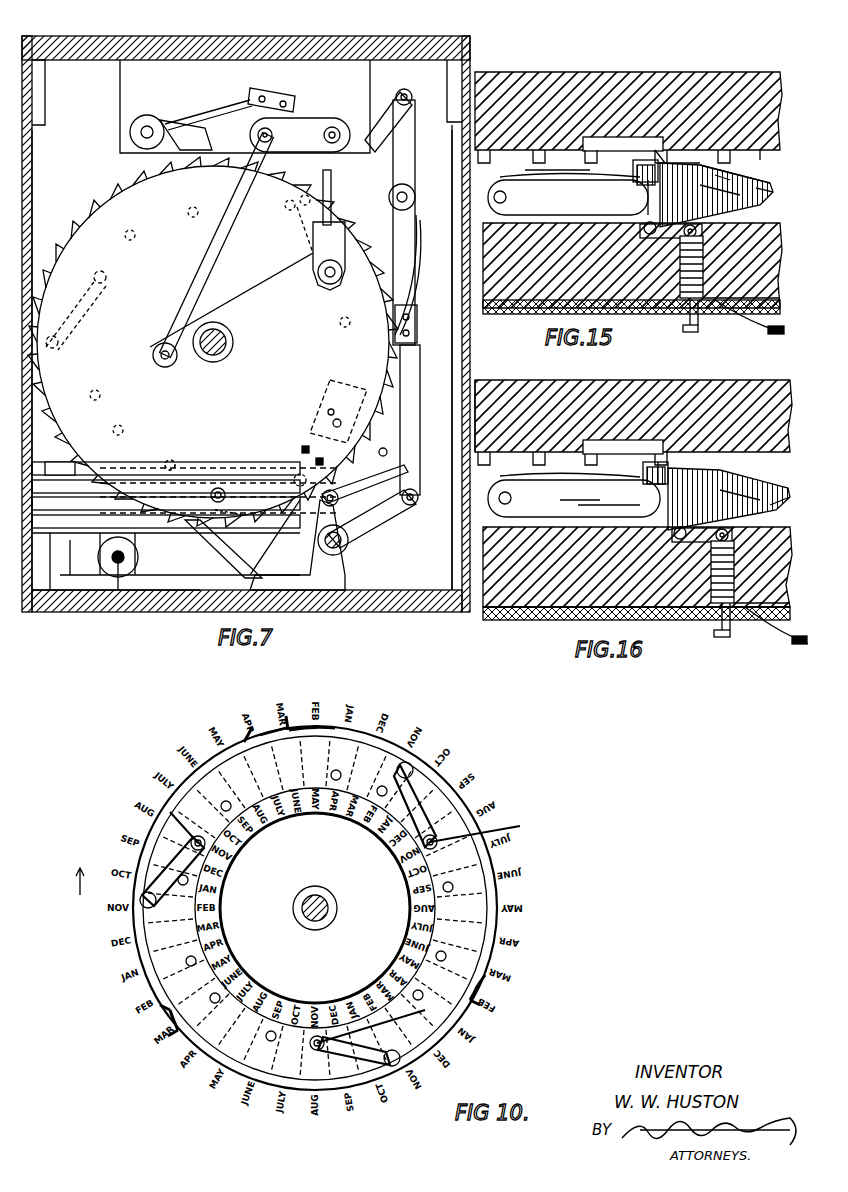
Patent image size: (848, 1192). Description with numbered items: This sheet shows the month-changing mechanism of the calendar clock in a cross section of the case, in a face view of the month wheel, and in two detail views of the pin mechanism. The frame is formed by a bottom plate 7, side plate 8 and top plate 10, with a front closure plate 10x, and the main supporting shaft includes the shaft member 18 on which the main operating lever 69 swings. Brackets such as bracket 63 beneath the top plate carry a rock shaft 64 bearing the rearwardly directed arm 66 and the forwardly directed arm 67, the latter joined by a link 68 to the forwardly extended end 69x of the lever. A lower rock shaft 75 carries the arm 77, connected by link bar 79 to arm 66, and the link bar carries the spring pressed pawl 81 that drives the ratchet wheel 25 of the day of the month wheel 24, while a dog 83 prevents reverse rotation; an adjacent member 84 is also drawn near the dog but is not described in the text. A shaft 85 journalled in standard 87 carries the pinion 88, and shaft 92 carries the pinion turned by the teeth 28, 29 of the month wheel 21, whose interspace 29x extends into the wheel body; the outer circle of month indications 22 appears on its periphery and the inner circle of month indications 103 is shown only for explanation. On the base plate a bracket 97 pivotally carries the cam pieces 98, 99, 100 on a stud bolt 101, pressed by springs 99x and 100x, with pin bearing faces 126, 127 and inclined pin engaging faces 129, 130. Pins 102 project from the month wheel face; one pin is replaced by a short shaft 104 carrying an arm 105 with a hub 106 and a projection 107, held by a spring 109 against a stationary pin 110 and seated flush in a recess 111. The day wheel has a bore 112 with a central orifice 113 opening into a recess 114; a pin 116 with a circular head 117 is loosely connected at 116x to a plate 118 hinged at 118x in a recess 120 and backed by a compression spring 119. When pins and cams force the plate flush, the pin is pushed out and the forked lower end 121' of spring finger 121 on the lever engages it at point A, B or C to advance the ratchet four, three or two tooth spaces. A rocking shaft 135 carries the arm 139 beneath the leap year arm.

In FIG. 7, the bottom plate 7 is at (56, 604).
In FIG. 7, the side plate 8 is at (106, 600).
In FIG. 7, the top plate 10 is at (166, 58).
In FIG. 7, the front closure plate 10x is at (30, 181).
In FIG. 7, the shaft member 18 is at (234, 344).
In FIG. 10, the shaft member 18 is at (337, 908).
In FIG. 15, the month wheel 21 is at (640, 74).
In FIG. 16, the month wheel 21 is at (656, 388).
In FIG. 10, the month wheel 21 is at (272, 1088).
In FIG. 10, the outer circle of month indications 22 is at (498, 905).
In FIG. 15, the day of the month wheel 24 is at (513, 312).
In FIG. 16, the day of the month wheel 24 is at (508, 620).
In FIG. 7, the ratchet wheel 25 is at (178, 190).
In FIG. 16, the ratchet wheel 25 is at (624, 380).
In FIG. 10, the tooth 28 is at (298, 728).
In FIG. 10, the tooth 29 is at (254, 728).
In FIG. 10, the interspace 29x is at (272, 728).
In FIG. 7, the bracket 63 is at (240, 106).
In FIG. 7, the rock shaft 64 is at (334, 126).
In FIG. 7, the rearwardly directed arm 66 is at (383, 98).
In FIG. 7, the forwardly directed arm 67 is at (302, 122).
In FIG. 7, the link 68 is at (186, 282).
In FIG. 7, the main operating lever 69 is at (231, 277).
In FIG. 7, the forwardly extended end 69x is at (165, 368).
In FIG. 7, the rock shaft 75 is at (340, 542).
In FIG. 7, the arm 77 is at (400, 516).
In FIG. 7, the link bar 79 is at (414, 428).
In FIG. 7, the spring pressed pawl 81 is at (402, 215).
In FIG. 7, the dog 83 is at (170, 124).
In FIG. 7, the plunger 84 is at (331, 178).
In FIG. 7, the shaft 85 is at (338, 495).
In FIG. 7, the standard 87 is at (432, 574).
In FIG. 7, the pinion 88 is at (365, 488).
In FIG. 7, the shaft 92 is at (388, 452).
In FIG. 7, the bracket 97 is at (160, 530).
In FIG. 7, the cam piece 98 is at (74, 480).
In FIG. 7, the cam piece 99 is at (108, 498).
In FIG. 15, the cam piece 99 is at (636, 182).
In FIG. 15, the spring 99x is at (548, 177).
In FIG. 16, the cam piece 100 is at (580, 507).
In FIG. 16, the spring 100x is at (588, 507).
In FIG. 7, the stud bolt 101 is at (62, 460).
In FIG. 15, the stud bolt 101 is at (507, 198).
In FIG. 16, the stud bolt 101 is at (512, 498).
In FIG. 7, the pin 102 is at (124, 235).
In FIG. 10, the pin 102 is at (245, 978).
In FIG. 10, the inner circle of month indications 103 is at (222, 908).
In FIG. 10, the short shaft 104 is at (170, 818).
In FIG. 7, the arm 105 is at (100, 308).
In FIG. 15, the arm 105 is at (607, 138).
In FIG. 16, the arm 105 is at (583, 447).
In FIG. 10, the arm 105 is at (190, 838).
In FIG. 15, the hub 106 is at (585, 138).
In FIG. 16, the hub 106 is at (598, 455).
In FIG. 10, the hub 106 is at (240, 840).
In FIG. 15, the projection 107 is at (690, 160).
In FIG. 16, the projection 107 is at (668, 464).
In FIG. 10, the projection 107 is at (142, 905).
In FIG. 7, the spring 109 is at (110, 564).
In FIG. 10, the stationary pin 110 is at (140, 880).
In FIG. 7, the recess 111 is at (312, 462).
In FIG. 15, the recess 111 is at (662, 160).
In FIG. 16, the recess 111 is at (588, 447).
In FIG. 10, the recess 111 is at (500, 822).
In FIG. 15, the bore 112 is at (702, 230).
In FIG. 16, the bore 112 is at (688, 620).
In FIG. 15, the central orifice 113 is at (706, 318).
In FIG. 16, the central orifice 113 is at (736, 625).
In FIG. 15, the recess 114 is at (682, 322).
In FIG. 16, the recess 114 is at (710, 620).
In FIG. 15, the pin 116 is at (705, 268).
In FIG. 16, the pin 116 is at (728, 620).
In FIG. 15, the connection 116x is at (760, 192).
In FIG. 16, the connection 116x is at (742, 528).
In FIG. 7, the circular head 117 is at (198, 535).
In FIG. 15, the circular head 117 is at (696, 333).
In FIG. 16, the circular head 117 is at (733, 628).
In FIG. 15, the plate 118 is at (655, 216).
In FIG. 16, the plate 118 is at (725, 534).
In FIG. 15, the hinge 118x is at (640, 224).
In FIG. 16, the hinge 118x is at (676, 528).
In FIG. 15, the compression spring 119 is at (705, 298).
In FIG. 16, the compression spring 119 is at (680, 620).
In FIG. 15, the recess 120 is at (718, 177).
In FIG. 16, the recess 120 is at (648, 608).
In FIG. 7, the spring finger 121 is at (328, 410).
In FIG. 15, the spring finger 121 is at (764, 340).
In FIG. 16, the spring finger 121 is at (781, 589).
In FIG. 7, the forked lower end 121' is at (275, 437).
In FIG. 15, the pin bearing face 126 is at (735, 150).
In FIG. 15, the pin bearing face 127 is at (672, 185).
In FIG. 16, the pin bearing face 127 is at (662, 506).
In FIG. 15, the inclined pin engaging face 129 is at (768, 152).
In FIG. 15, the inclined pin engaging face 130 is at (700, 186).
In FIG. 16, the inclined pin engaging face 130 is at (745, 500).
In FIG. 7, the rocking shaft 135 is at (118, 592).
In FIG. 7, the arm 139 is at (205, 590).
In FIG. 7, the point A is at (289, 467).
In FIG. 7, the point B is at (243, 522).
In FIG. 7, the point C is at (213, 485).